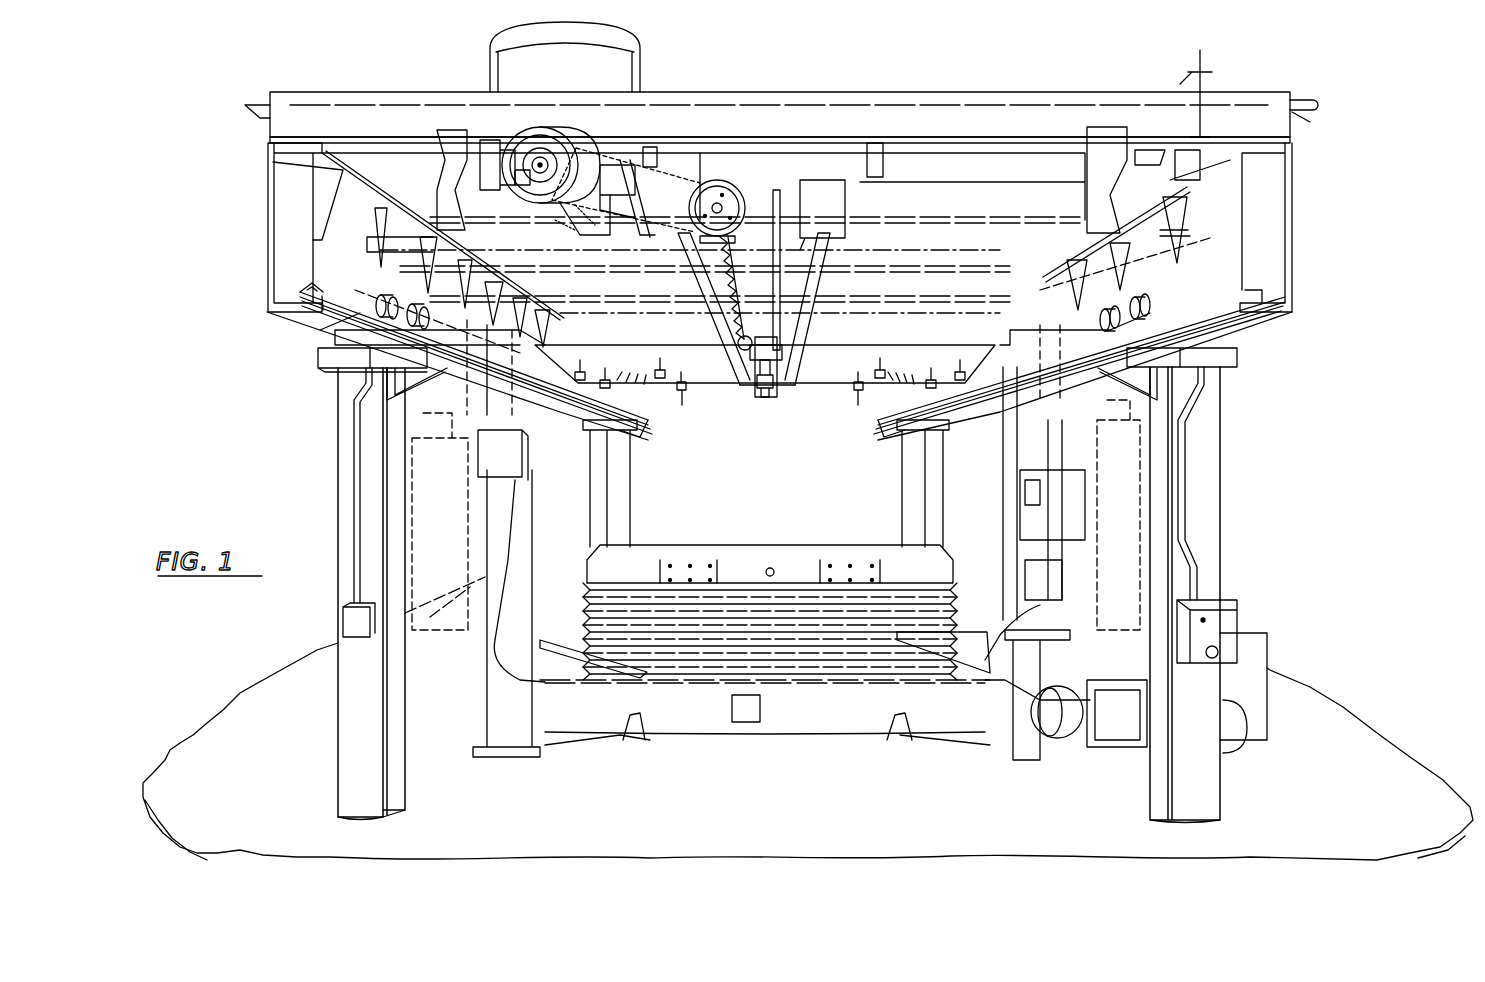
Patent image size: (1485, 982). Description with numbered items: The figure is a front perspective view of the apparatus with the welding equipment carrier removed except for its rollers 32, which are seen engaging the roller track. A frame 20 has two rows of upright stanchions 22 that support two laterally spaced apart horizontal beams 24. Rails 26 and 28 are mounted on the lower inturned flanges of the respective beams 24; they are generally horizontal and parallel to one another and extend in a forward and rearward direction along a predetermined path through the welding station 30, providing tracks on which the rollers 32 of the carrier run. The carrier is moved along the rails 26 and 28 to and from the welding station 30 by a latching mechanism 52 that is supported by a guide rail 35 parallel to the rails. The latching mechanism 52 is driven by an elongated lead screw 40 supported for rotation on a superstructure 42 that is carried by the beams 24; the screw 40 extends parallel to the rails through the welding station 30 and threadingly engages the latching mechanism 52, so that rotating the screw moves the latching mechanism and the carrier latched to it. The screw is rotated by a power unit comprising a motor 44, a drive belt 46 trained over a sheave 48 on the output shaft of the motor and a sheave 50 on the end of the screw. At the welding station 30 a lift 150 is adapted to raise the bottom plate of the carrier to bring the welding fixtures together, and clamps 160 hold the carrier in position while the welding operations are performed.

The frame 20 is at (1300, 200).
The upright stanchions 22 is at (343, 725).
The horizontal beams 24 is at (268, 263).
The rail 26 is at (297, 292).
The rail 28 is at (1255, 300).
The welding station 30 is at (790, 486).
The rollers 32 is at (378, 292).
The guide rail 35 is at (783, 192).
The lead screw 40 is at (735, 324).
The superstructure 42 is at (925, 163).
The motor 44 is at (548, 162).
The drive belt 46 is at (632, 160).
The sheave 48 is at (533, 145).
The sheave 50 is at (722, 182).
The latching mechanism 52 is at (758, 378).
The lift 150 is at (773, 568).
The clamps 160 is at (700, 388).